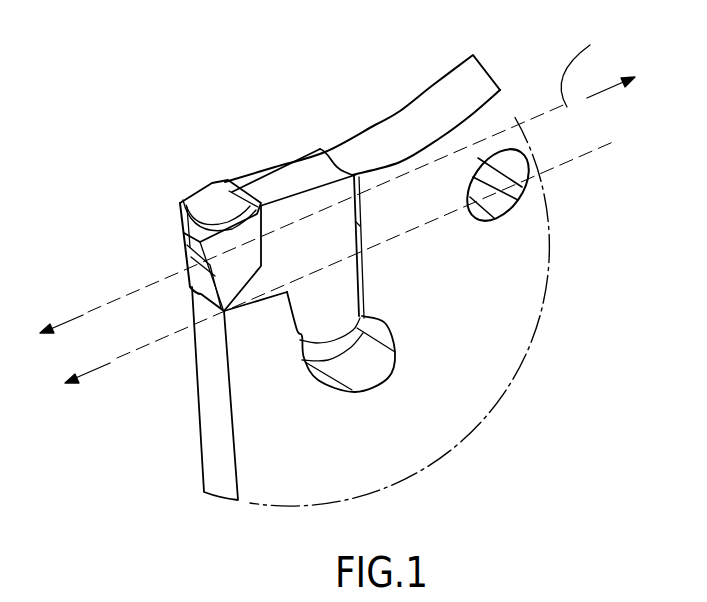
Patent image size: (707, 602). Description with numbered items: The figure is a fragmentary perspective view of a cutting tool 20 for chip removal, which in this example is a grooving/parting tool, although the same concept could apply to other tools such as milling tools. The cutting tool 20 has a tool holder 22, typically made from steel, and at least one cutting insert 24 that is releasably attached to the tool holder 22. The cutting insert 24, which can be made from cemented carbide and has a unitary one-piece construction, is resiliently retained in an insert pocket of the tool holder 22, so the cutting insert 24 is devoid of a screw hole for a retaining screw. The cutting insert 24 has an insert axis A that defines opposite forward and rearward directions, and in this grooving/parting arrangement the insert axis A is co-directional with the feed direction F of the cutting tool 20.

The cutting tool 20 is at (160, 118).
The tool holder 22 is at (498, 285).
The cutting insert 24 is at (303, 217).